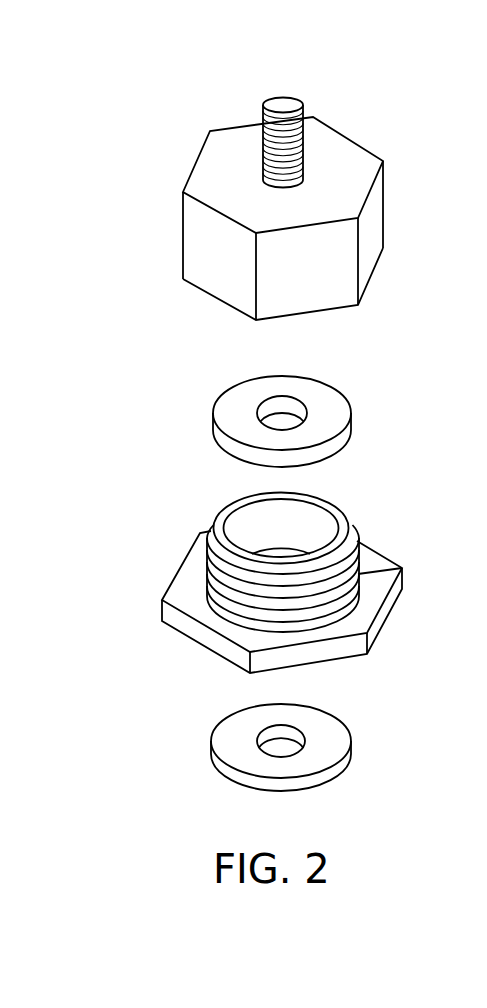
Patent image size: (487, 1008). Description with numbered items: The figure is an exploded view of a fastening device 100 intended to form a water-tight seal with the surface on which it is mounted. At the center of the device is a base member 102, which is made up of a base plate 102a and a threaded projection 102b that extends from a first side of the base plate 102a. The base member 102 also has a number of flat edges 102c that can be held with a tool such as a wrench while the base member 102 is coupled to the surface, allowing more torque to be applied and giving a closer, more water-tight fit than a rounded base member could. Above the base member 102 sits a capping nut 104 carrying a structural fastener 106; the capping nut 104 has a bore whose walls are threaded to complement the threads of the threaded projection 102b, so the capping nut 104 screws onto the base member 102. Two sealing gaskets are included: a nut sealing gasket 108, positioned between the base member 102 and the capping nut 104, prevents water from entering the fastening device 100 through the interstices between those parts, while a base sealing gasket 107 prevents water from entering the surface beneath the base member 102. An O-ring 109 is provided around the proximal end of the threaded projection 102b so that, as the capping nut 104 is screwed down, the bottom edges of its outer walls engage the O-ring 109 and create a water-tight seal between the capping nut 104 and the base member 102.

The fastening device 100 is at (157, 164).
The base member 102 is at (147, 590).
The base plate 102a is at (178, 583).
The threaded projection 102b is at (333, 516).
The flat edges 102c is at (207, 638).
The capping nut 104 is at (182, 294).
The structural fastener 106 is at (287, 94).
The base sealing gasket 107 is at (209, 778).
The nut sealing gasket 108 is at (207, 416).
The O-ring 109 is at (402, 568).